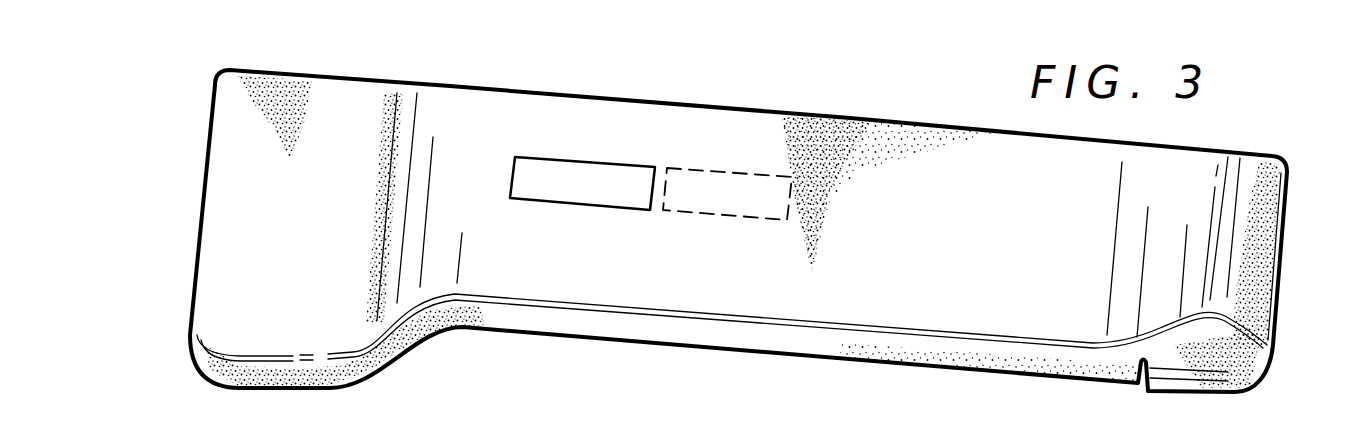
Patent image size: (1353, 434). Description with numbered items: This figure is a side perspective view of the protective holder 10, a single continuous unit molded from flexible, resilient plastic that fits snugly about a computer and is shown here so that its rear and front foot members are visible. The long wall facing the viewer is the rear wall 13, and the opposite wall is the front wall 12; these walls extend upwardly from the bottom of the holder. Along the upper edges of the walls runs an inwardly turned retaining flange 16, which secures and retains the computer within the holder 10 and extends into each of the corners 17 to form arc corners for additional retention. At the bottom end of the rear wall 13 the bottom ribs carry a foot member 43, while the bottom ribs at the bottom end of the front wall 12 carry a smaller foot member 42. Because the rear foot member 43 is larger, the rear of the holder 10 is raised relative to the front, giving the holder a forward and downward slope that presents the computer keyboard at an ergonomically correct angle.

The protective holder 10 is at (916, 104).
The front wall 12 is at (1285, 259).
The rear wall 13 is at (197, 232).
The retaining flange 16 is at (220, 433).
The corners 17 is at (166, 433).
The foot member 42 is at (1233, 385).
The foot member 43 is at (283, 375).